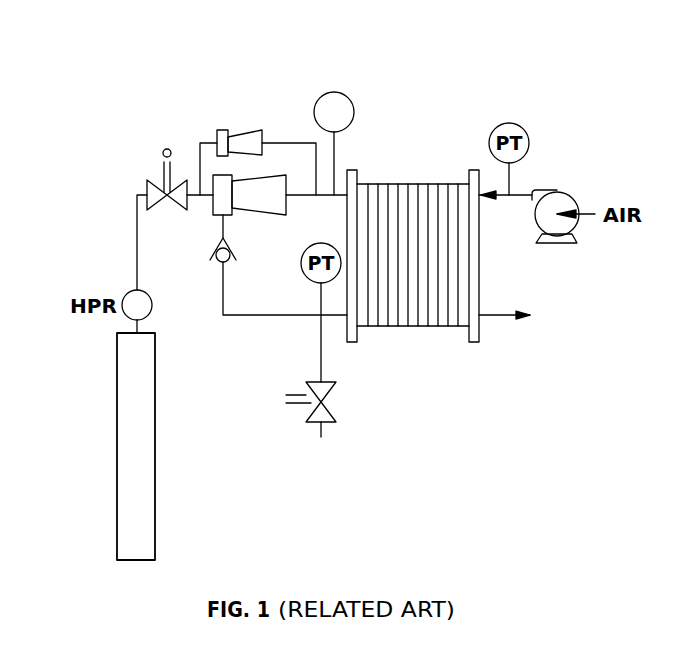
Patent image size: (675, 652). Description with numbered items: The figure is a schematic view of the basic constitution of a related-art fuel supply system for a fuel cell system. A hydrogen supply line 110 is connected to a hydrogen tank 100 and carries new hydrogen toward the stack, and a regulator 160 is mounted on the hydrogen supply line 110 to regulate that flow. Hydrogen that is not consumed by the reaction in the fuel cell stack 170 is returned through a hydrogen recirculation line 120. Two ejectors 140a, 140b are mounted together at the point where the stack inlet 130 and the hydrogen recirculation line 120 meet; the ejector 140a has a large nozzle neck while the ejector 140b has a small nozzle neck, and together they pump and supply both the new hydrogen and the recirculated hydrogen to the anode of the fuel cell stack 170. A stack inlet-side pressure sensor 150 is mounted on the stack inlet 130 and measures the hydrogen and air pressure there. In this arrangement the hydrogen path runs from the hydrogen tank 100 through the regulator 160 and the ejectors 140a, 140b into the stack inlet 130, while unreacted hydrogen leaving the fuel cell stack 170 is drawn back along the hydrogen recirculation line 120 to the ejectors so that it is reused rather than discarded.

The hydrogen tank 100 is at (117, 415).
The hydrogen supply line 110 is at (135, 257).
The hydrogen recirculation line 120 is at (233, 317).
The stack inlet 130 is at (418, 255).
The ejector 140a is at (270, 180).
The ejector 140b is at (245, 130).
The stack inlet-side pressure sensor 150 is at (342, 92).
The regulator 160 is at (155, 182).
The fuel cell stack 170 is at (437, 322).